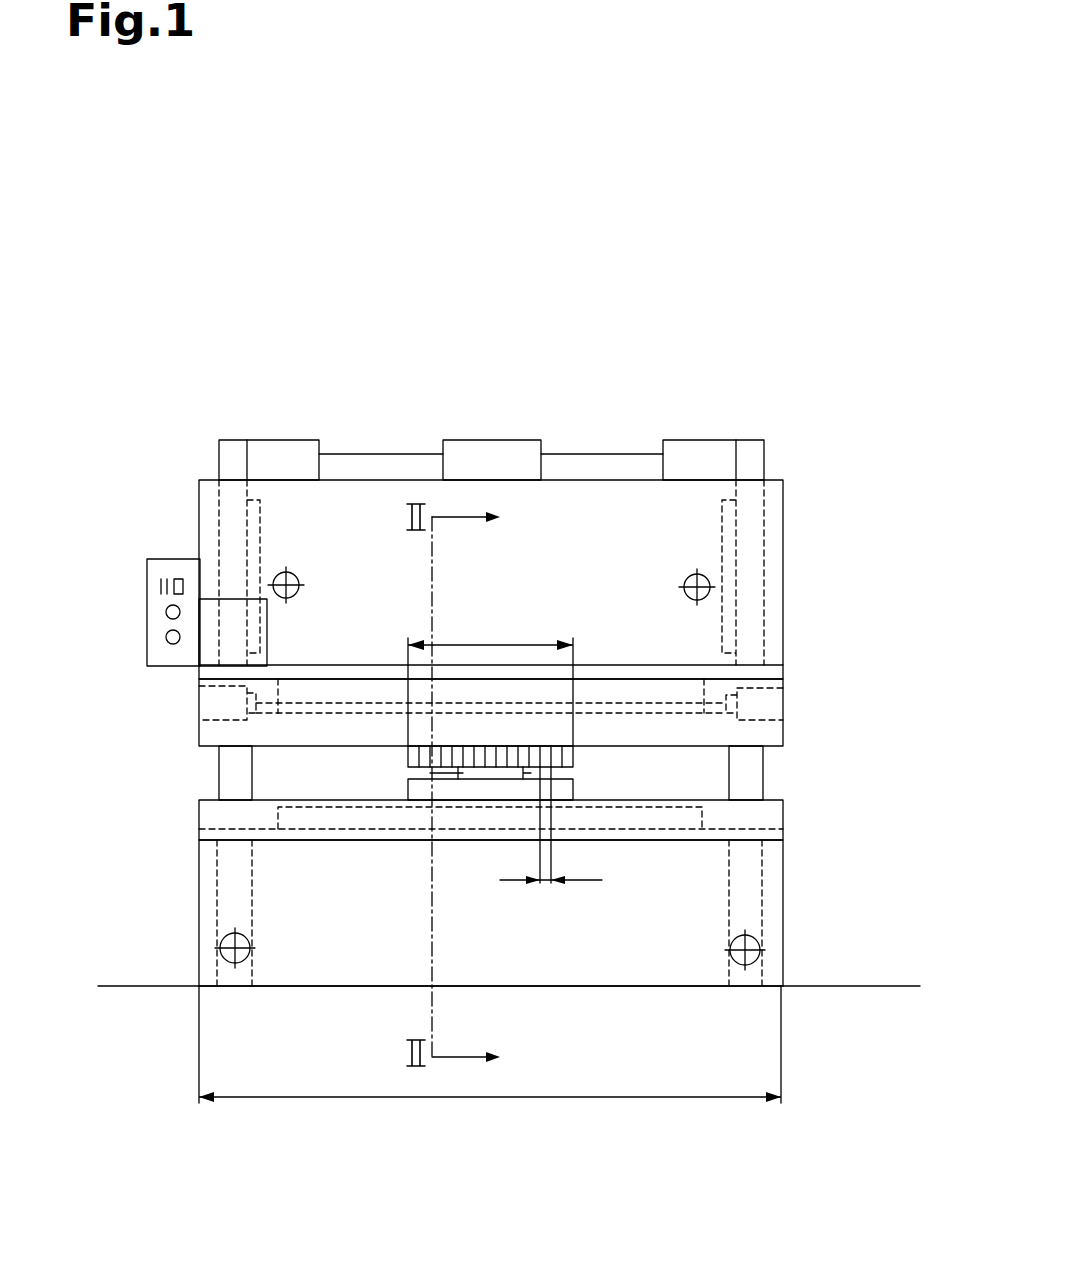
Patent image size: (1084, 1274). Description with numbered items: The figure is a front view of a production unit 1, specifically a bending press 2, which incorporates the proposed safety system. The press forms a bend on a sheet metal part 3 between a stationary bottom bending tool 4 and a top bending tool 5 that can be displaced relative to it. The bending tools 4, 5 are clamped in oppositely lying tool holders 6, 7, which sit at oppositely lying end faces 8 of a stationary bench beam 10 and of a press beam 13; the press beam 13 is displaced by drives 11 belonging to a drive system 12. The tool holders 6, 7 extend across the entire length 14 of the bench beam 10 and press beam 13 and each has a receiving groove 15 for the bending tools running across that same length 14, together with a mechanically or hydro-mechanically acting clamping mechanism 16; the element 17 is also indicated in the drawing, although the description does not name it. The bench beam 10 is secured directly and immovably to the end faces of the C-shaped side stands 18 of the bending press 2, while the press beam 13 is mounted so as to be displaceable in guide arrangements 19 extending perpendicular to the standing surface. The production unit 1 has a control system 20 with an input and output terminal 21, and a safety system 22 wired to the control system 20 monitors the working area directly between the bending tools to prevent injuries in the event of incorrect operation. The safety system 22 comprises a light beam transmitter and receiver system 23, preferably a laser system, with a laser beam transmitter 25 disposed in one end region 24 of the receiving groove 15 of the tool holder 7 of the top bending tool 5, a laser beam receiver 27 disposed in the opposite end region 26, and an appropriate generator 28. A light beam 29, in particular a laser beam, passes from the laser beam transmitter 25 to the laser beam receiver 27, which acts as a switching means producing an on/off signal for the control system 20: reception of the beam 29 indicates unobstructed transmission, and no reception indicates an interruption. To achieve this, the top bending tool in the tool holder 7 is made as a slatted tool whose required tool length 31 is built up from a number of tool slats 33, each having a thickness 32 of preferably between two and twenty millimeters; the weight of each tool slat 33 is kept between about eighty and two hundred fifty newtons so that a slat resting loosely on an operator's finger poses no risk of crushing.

The production unit 1 is at (830, 127).
The bending press 2 is at (838, 386).
The sheet metal part 3 is at (462, 772).
The bottom bending tool 4 is at (420, 790).
The top bending tool 5 is at (575, 757).
The tool holder 6 is at (780, 820).
The tool holder 7 is at (690, 690).
The end face 8 is at (645, 665).
The bench beam 10 is at (380, 973).
The drives 11 is at (277, 455).
The drive system 12 is at (487, 408).
The press beam 13 is at (770, 507).
The length 14 is at (565, 1088).
The receiving groove 15 is at (377, 688).
The clamping mechanism 16 is at (450, 680).
The outlet 17 is at (592, 668).
The side stands 18 is at (235, 772).
The guide arrangements 19 is at (250, 505).
The control system 20 is at (134, 574).
The input and output terminal 21 is at (153, 630).
The safety system 22 is at (165, 687).
The light beam transmitter and receiver system 23 is at (800, 707).
The end region 24 is at (178, 750).
The laser beam transmitter 25 is at (200, 706).
The end region 26 is at (860, 665).
The laser beam receiver 27 is at (767, 708).
The generator 28 is at (267, 638).
The light beam 29 is at (287, 703).
The tool length 31 is at (497, 640).
The thickness 32 is at (592, 884).
The tool slat 33 is at (497, 800).